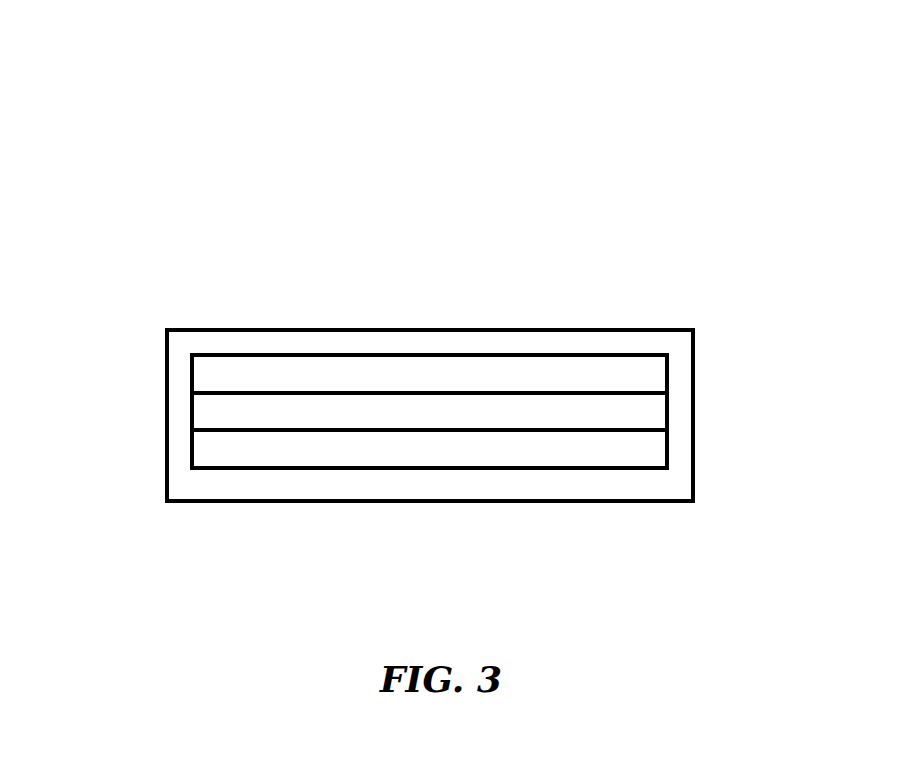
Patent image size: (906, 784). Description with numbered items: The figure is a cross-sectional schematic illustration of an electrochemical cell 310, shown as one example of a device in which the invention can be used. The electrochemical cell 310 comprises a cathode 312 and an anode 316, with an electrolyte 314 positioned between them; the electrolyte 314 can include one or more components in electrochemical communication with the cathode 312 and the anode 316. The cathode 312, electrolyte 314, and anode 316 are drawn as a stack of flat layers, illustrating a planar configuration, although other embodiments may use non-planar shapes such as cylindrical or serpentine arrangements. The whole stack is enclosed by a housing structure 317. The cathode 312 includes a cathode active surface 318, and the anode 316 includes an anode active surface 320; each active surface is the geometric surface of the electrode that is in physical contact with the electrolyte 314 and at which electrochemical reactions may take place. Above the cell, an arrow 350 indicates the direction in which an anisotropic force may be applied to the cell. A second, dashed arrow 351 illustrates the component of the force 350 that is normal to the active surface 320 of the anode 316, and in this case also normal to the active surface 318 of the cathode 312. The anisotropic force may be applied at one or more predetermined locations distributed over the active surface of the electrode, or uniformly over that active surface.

The electrochemical cell 310 is at (50, 262).
The cathode 312 is at (642, 368).
The electrolyte 314 is at (642, 414).
The anode 316 is at (642, 442).
The housing structure 317 is at (555, 343).
The cathode active surface 318 is at (283, 393).
The anode active surface 320 is at (290, 432).
The arrow 350 is at (415, 35).
The arrow 351 is at (415, 35).